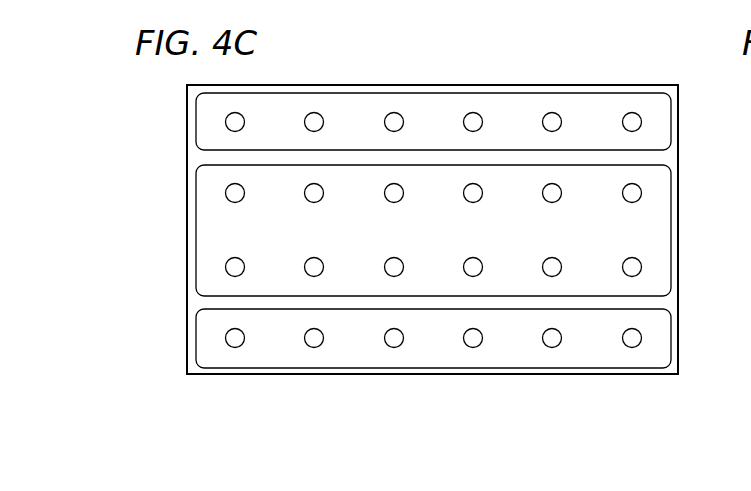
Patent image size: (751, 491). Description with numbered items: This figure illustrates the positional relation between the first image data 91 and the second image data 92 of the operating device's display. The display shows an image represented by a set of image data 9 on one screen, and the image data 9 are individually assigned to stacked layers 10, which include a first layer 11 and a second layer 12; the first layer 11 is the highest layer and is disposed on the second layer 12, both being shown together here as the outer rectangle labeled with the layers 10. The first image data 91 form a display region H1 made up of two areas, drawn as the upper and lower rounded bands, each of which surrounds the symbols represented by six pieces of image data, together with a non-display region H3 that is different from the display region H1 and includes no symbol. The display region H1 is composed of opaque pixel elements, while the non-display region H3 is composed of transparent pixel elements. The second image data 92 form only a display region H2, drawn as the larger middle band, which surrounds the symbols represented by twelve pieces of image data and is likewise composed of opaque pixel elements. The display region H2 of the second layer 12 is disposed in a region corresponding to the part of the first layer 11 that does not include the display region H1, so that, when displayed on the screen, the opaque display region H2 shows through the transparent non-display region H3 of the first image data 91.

The layers 10 is at (445, 209).
The first layer 11 is at (624, 71).
The second layer 12 is at (445, 209).
The image data 9 is at (410, 230).
The first image data 91 is at (134, 335).
The second image data 92 is at (655, 198).
The display region H1 is at (196, 135).
The display region H2 is at (673, 250).
The non-display region H3 is at (207, 304).